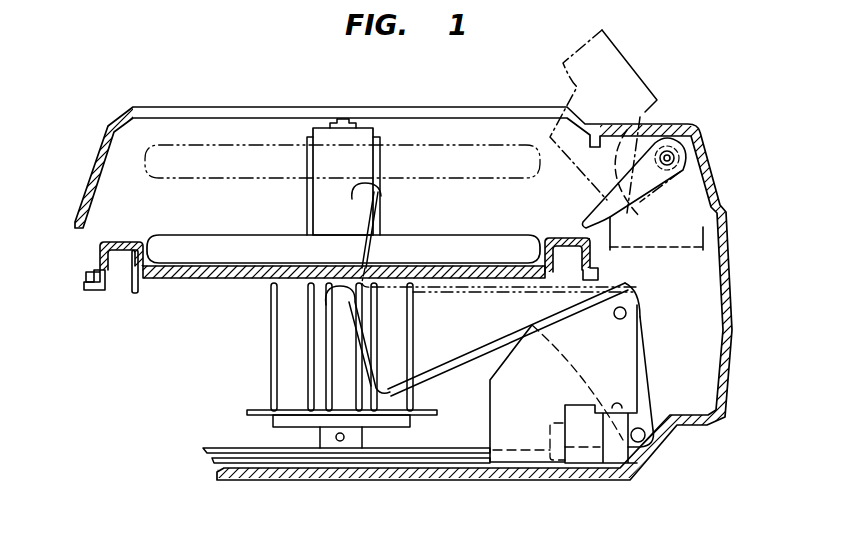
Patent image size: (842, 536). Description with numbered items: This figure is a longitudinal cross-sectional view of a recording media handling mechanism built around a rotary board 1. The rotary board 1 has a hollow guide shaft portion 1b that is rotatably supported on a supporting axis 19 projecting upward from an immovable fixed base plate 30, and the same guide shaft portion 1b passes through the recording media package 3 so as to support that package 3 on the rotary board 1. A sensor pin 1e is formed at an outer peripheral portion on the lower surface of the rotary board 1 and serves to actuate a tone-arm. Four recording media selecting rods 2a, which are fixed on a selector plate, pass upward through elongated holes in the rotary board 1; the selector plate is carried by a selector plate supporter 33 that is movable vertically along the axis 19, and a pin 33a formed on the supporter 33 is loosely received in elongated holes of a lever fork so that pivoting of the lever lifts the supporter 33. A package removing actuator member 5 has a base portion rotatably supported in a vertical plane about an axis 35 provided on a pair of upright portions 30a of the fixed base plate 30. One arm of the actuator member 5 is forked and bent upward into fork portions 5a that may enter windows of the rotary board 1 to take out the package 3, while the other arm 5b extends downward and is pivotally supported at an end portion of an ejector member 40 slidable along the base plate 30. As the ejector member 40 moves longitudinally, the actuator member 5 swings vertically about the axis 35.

The rotary board 1 is at (188, 279).
The hollow guide shaft portion 1b is at (365, 128).
The sensor pin 1e is at (121, 289).
The supporting axis 19 is at (343, 119).
The recording media package 3 is at (210, 236).
The package removing actuator member 5 is at (494, 346).
The fork portions 5a is at (338, 282).
The other arm 5b is at (645, 381).
The recording media selecting rods 2a is at (311, 343).
The fixed base plate 30 is at (462, 461).
The upright portions 30a is at (628, 346).
The selector plate supporter 33 is at (402, 428).
The pin 33a is at (335, 437).
The axis 35 is at (628, 311).
The ejector member 40 is at (216, 446).